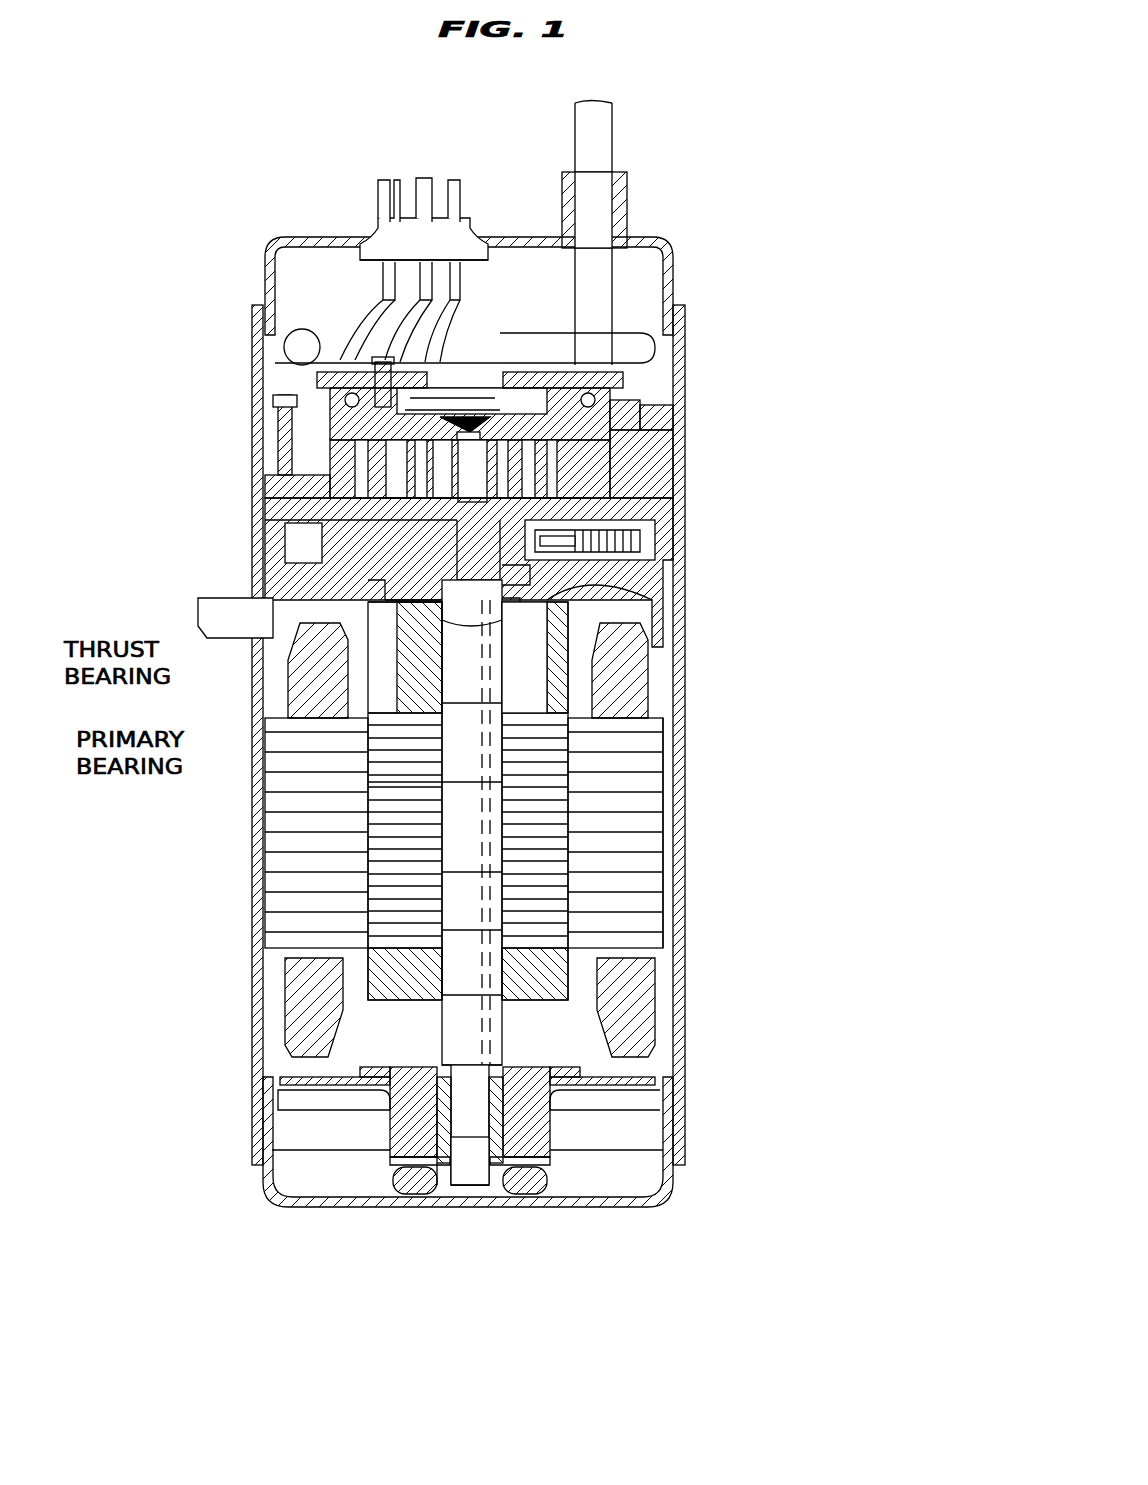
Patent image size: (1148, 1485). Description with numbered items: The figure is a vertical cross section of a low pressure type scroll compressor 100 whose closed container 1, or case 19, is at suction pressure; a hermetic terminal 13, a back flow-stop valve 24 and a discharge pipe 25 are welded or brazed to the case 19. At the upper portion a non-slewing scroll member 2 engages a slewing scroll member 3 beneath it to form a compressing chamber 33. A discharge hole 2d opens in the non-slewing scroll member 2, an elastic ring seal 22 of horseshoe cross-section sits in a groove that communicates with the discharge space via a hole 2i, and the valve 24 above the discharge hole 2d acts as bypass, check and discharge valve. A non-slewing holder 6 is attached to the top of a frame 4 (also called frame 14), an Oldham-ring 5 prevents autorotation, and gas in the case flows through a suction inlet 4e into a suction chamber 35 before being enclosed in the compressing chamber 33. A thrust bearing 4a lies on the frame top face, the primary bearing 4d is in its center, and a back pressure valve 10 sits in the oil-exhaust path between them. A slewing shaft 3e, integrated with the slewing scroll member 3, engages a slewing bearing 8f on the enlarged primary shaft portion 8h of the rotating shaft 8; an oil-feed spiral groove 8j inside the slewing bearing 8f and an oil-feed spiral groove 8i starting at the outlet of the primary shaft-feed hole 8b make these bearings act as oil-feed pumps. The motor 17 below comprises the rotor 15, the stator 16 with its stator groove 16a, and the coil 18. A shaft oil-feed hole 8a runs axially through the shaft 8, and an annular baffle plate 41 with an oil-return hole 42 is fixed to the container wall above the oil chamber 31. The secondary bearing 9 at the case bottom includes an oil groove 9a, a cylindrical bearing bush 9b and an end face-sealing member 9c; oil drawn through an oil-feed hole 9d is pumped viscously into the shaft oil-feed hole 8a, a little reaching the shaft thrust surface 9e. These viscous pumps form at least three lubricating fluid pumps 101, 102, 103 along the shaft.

The hermetic compressor 100 is at (213, 164).
The closed container 1 is at (686, 493).
The case 19 is at (308, 240).
The hermetic terminal 13 is at (440, 236).
The back flow-stop valve 24 is at (494, 396).
The discharge pipe 25 is at (633, 336).
The compressing chamber 33 is at (372, 376).
The non-slewing scroll member 2 is at (330, 400).
The elastic ring seal 22 is at (600, 386).
The hole 2i is at (662, 412).
The discharge hole 2d is at (650, 422).
The non-slewing holder 6 is at (305, 465).
The Oldham-ring 5 is at (605, 474).
The suction chamber 35 is at (318, 496).
The slewing scroll member 3 is at (320, 535).
The suction inlet 4e is at (300, 550).
The lubricating fluid pump 103 is at (610, 526).
The back pressure valve 10 is at (640, 540).
The lubricating fluid pump 102 is at (610, 554).
The frame 14 is at (240, 620).
The slewing shaft 3e is at (652, 600).
The oil-feed spiral groove 8j is at (535, 585).
The oil-feed spiral groove 8i is at (516, 605).
The primary shaft-feed hole 8b is at (504, 625).
The frame 4 is at (392, 626).
The thrust bearing 4a is at (398, 602).
The primary bearing 4d is at (385, 648).
The coil 18 is at (548, 650).
The motor 17 is at (560, 800).
The rotating shaft 8 is at (465, 856).
The shaft oil-feed hole 8a is at (492, 902).
The slewing bearing 8f is at (395, 730).
The primary shaft portion 8h is at (405, 783).
The rotor 15 is at (380, 840).
The stator 16 is at (320, 890).
The stator groove 16a is at (668, 935).
The shaft thrust surface 9e is at (505, 1062).
The secondary bearing 9 is at (392, 1100).
The baffle plate 41 is at (590, 1082).
The oil-return hole 42 is at (580, 1140).
The oil chamber 31 is at (325, 1152).
The lubricating fluid pump 101 is at (470, 1182).
The oil groove 9a is at (420, 1152).
The cylindrical bearing bush 9b is at (520, 1180).
The end face-sealing member 9c is at (438, 1192).
The oil-feed hole 9d is at (466, 1188).